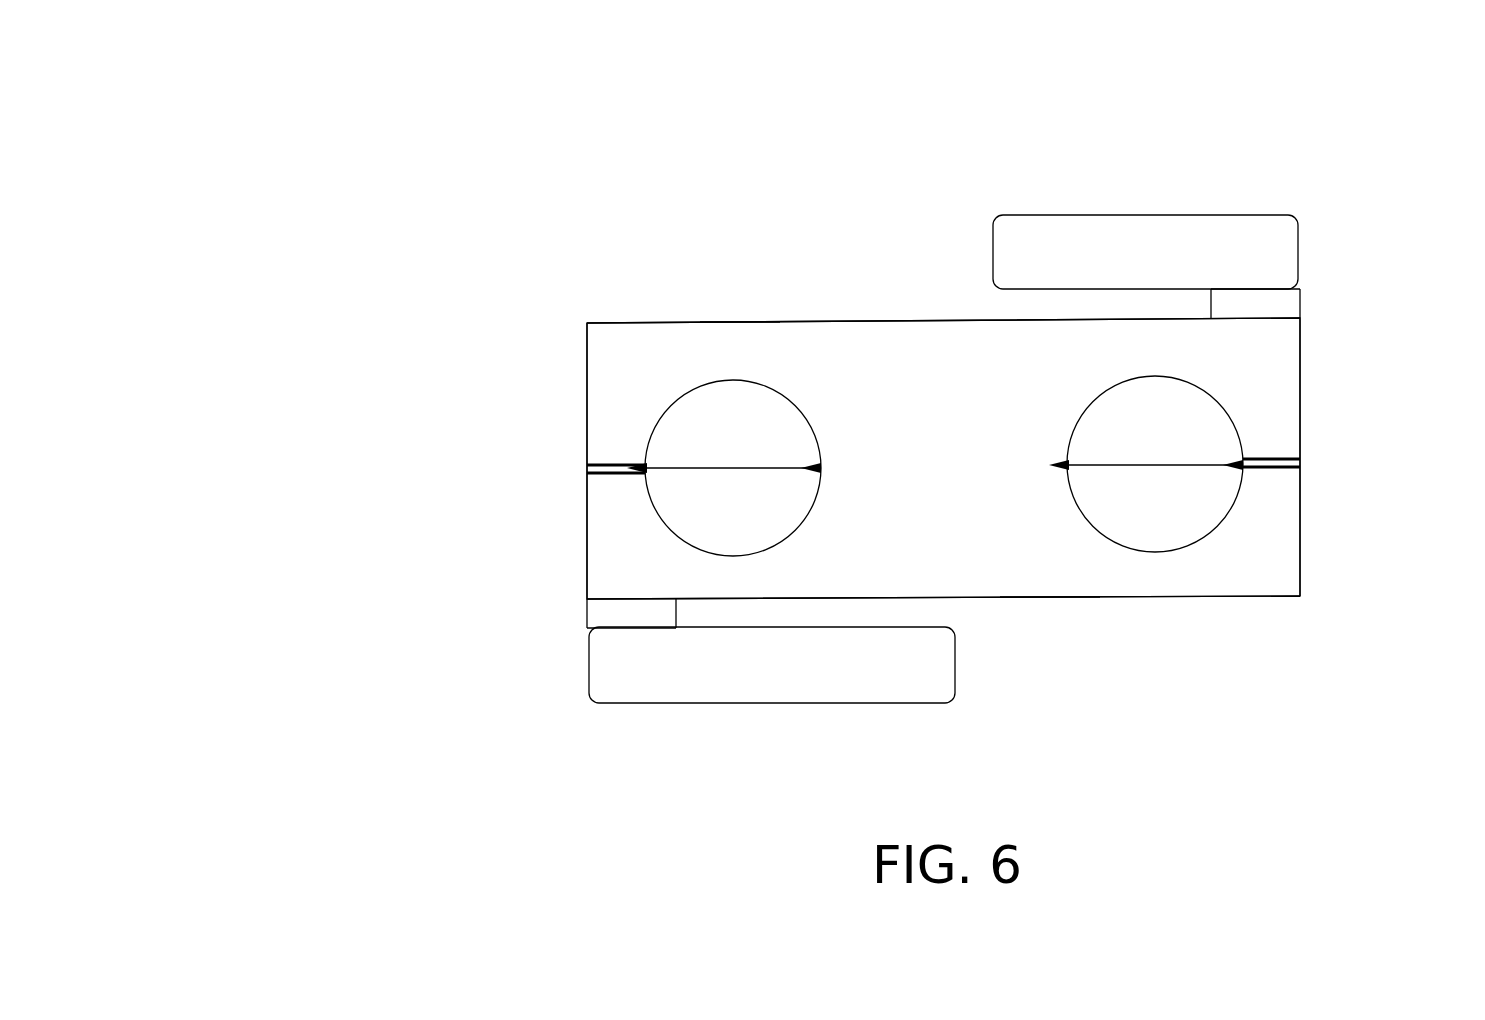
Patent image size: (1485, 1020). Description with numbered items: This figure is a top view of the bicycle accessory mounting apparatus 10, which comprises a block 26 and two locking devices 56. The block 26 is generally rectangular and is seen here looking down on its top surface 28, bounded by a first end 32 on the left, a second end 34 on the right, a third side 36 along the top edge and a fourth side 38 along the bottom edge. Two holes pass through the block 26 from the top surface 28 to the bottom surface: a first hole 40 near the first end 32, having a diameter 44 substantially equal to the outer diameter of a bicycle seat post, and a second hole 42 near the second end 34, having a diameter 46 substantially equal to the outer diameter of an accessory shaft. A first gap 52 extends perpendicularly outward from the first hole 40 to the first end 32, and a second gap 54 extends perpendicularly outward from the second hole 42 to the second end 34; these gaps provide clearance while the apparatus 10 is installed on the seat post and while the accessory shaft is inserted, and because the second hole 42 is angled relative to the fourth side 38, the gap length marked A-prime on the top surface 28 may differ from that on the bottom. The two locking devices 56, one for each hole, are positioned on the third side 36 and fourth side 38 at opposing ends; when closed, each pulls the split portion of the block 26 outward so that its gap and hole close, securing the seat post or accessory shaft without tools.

The bicycle accessory mounting apparatus 10 is at (345, 178).
The block 26 is at (885, 335).
The top surface 28 is at (1060, 552).
The first end 32 is at (580, 382).
The second end 34 is at (1303, 390).
The third side 36 is at (738, 323).
The fourth side 38 is at (1047, 597).
The first hole 40 is at (696, 410).
The second hole 42 is at (1205, 435).
The first hole diameter 44 is at (733, 438).
The second hole diameter 46 is at (1155, 438).
The first gap 52 is at (565, 468).
The second gap 54 is at (1305, 462).
The locking device 56 is at (1145, 215).